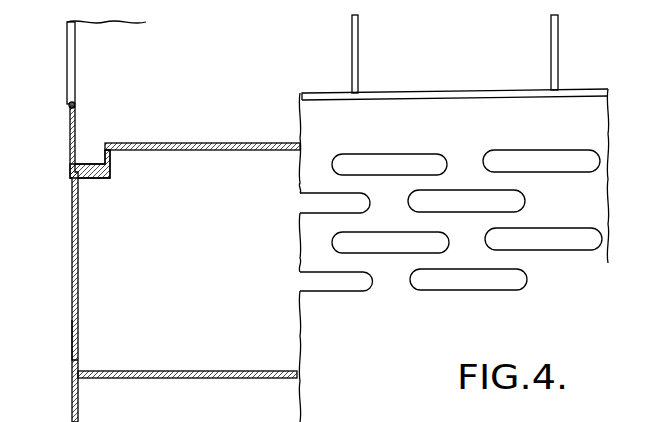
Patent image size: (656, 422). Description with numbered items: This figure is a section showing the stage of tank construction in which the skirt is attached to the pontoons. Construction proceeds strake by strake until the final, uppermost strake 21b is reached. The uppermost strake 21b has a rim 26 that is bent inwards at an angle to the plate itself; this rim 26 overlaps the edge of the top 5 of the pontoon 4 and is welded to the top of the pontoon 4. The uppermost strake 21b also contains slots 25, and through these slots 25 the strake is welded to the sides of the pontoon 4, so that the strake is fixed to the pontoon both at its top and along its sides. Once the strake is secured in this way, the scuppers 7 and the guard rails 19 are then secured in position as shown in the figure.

The guard rails 19 is at (67, 57).
The scuppers 7 is at (88, 158).
The top of pontoon 5 is at (203, 143).
The rim 26 is at (72, 171).
The uppermost strake 21b is at (73, 250).
The pontoon 4 is at (95, 319).
The slots 25 is at (426, 161).